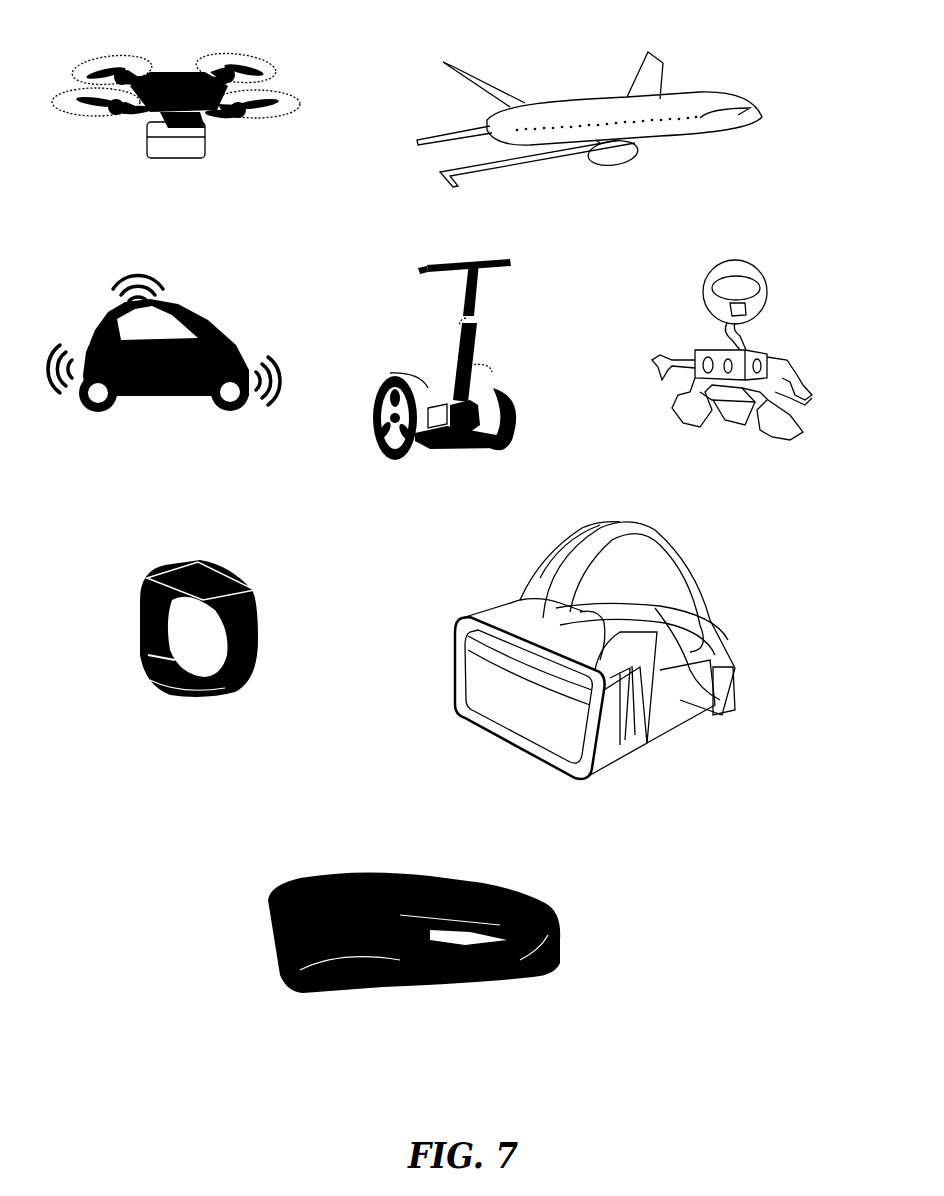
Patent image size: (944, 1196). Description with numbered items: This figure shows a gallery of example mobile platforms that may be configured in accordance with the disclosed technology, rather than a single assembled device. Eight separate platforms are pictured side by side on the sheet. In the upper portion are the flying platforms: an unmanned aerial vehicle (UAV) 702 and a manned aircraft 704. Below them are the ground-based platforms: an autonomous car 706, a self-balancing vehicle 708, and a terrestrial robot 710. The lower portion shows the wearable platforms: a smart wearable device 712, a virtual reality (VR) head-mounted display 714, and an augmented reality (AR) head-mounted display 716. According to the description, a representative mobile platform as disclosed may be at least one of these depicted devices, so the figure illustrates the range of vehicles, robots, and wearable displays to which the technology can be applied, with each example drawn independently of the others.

The unmanned aerial vehicle (UAV) 702 is at (267, 66).
The manned aircraft 704 is at (680, 104).
The autonomous car 706 is at (197, 326).
The self-balancing vehicle 708 is at (470, 342).
The terrestrial robot 710 is at (760, 358).
The smart wearable device 712 is at (260, 606).
The virtual reality (VR) head-mounted display 714 is at (687, 590).
The augmented reality (AR) head-mounted display 716 is at (503, 908).